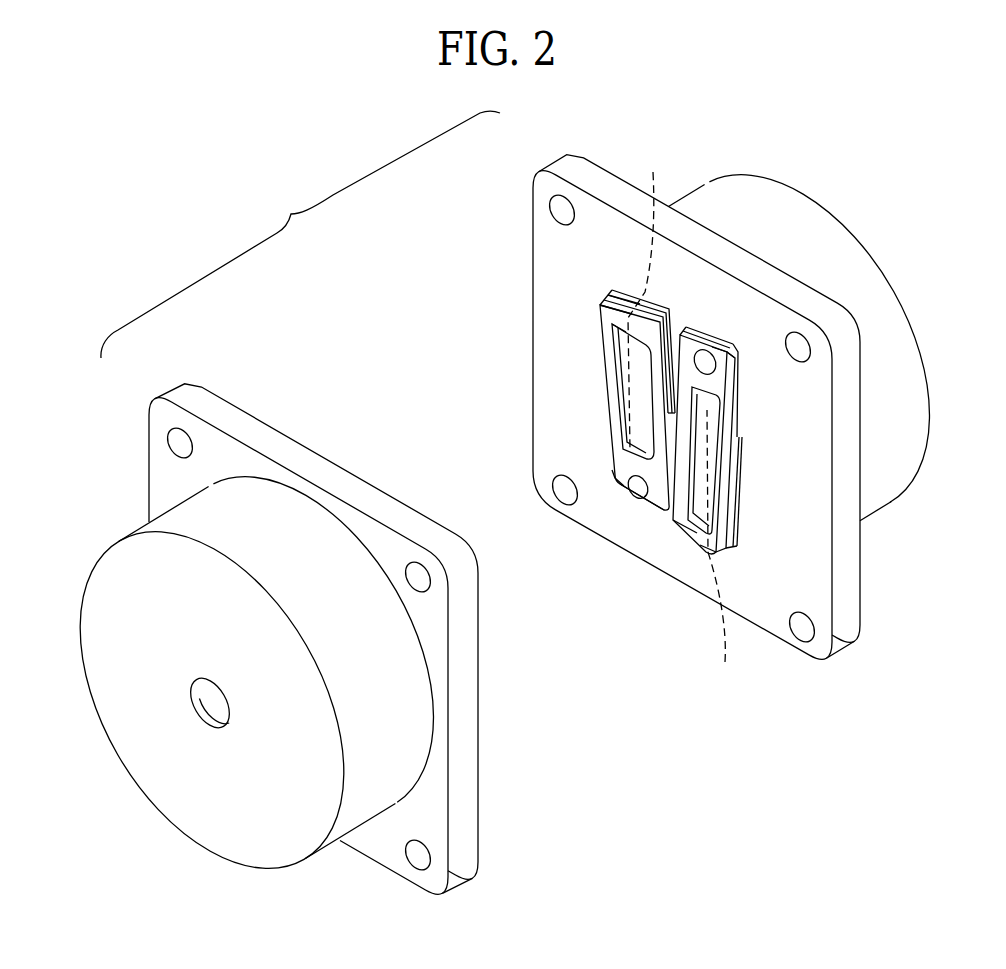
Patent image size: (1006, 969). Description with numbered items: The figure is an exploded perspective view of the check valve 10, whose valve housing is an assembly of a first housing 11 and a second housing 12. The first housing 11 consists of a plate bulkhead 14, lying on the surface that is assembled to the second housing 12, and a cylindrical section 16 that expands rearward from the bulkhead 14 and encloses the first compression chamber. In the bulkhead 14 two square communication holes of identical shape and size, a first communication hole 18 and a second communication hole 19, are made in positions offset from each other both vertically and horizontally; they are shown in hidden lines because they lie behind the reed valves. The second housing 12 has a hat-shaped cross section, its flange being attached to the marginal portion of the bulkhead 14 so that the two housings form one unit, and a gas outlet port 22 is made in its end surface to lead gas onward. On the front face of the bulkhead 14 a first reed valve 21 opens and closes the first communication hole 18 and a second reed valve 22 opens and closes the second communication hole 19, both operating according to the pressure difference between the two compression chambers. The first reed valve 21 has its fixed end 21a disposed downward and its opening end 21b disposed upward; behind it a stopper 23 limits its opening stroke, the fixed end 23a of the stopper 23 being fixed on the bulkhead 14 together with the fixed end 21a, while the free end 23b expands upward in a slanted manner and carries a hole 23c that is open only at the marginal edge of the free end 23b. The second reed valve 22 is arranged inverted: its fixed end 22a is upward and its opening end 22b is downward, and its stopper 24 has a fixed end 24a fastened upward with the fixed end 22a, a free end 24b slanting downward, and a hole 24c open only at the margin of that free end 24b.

The check valve 10 is at (300, 206).
The first housing 11 is at (712, 437).
The second housing 12 is at (479, 800).
The plate bulkhead 14 is at (773, 617).
The cylindrical section 16 is at (890, 332).
The first communication hole 18 is at (649, 295).
The second communication hole 19 is at (722, 553).
The first reed valve 21 is at (555, 380).
The fixed end 21a is at (627, 445).
The opening end 21b is at (617, 297).
The second reed valve 22 is at (207, 703).
The fixed end 22a is at (737, 418).
The opening end 22b is at (740, 546).
The stopper 23 is at (554, 453).
The fixed end 23a is at (620, 468).
The free end 23b is at (613, 322).
The hole 23c is at (625, 360).
The stopper 24 is at (809, 464).
The fixed end 24a is at (733, 367).
The free end 24b is at (697, 540).
The hole 24c is at (697, 533).